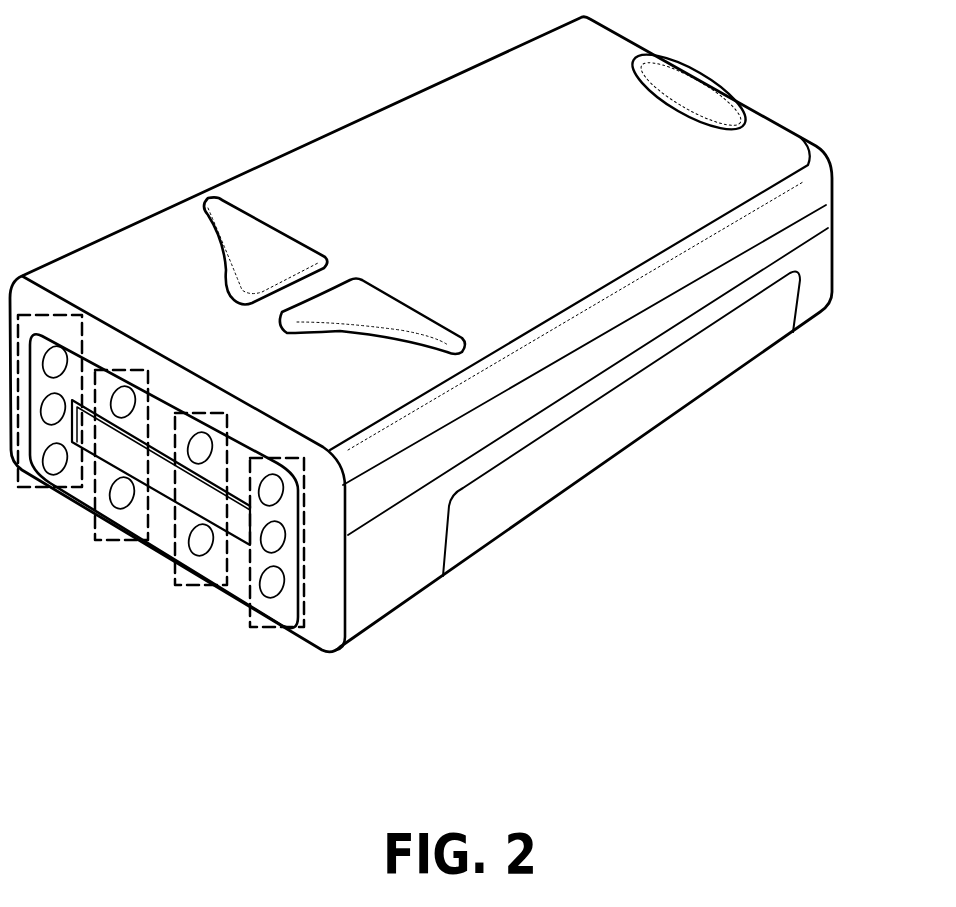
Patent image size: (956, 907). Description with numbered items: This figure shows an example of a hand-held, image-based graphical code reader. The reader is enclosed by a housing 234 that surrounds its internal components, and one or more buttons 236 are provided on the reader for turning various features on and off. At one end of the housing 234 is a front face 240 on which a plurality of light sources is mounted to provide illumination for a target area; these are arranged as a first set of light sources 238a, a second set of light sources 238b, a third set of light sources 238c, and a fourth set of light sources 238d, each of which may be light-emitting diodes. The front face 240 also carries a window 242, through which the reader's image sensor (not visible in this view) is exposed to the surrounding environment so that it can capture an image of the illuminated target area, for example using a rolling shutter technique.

The housing 234 is at (417, 122).
The button 236 is at (233, 217).
The first set of light sources 238a is at (298, 630).
The second set of light sources 238b is at (200, 590).
The third set of light sources 238c is at (113, 544).
The fourth set of light sources 238d is at (45, 490).
The front face 240 is at (238, 577).
The window 242 is at (164, 478).